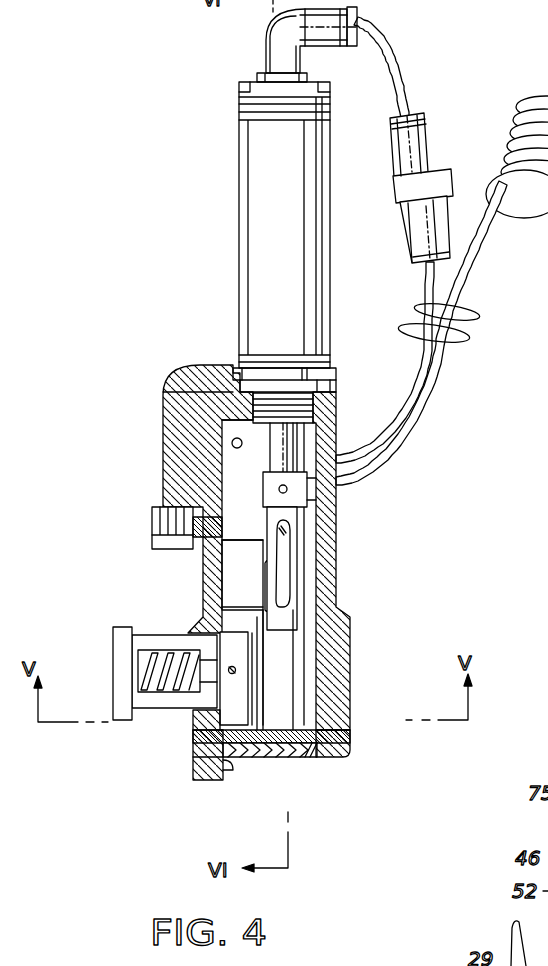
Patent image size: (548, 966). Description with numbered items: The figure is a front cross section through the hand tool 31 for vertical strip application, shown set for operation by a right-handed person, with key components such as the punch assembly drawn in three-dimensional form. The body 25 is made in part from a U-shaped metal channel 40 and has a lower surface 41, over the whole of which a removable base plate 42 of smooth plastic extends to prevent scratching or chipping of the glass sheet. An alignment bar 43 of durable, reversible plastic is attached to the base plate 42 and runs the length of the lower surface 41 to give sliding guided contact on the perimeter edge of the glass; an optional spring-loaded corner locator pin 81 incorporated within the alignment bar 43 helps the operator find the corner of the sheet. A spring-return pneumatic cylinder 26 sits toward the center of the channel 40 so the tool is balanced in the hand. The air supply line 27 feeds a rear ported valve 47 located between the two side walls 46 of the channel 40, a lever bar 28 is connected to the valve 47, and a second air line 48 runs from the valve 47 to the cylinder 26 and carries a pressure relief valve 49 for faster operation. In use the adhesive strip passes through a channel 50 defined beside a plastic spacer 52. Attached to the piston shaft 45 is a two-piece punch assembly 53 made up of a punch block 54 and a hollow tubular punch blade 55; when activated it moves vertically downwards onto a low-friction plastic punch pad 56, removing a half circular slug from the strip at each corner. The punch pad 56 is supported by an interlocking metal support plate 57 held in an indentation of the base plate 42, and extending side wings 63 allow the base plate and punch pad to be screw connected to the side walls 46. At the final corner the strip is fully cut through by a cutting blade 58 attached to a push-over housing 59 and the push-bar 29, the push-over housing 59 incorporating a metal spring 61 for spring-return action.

The body 25 is at (253, 457).
The pneumatic cylinder 26 is at (258, 196).
The air supply line 27 is at (478, 242).
The lever bar 28 is at (152, 527).
The push-bar 29 is at (118, 645).
The hand tool 31 is at (247, 420).
The U-shaped metal channel 40 is at (250, 410).
The lower surface 41 is at (350, 723).
The removable base plate 42 is at (350, 755).
The alignment bar 43 is at (200, 765).
The piston shaft 45 is at (278, 430).
The side walls 46 is at (205, 448).
The rear ported valve 47 is at (230, 467).
The second air line 48 is at (393, 53).
The pressure relief valve 49 is at (417, 145).
The channel 50 is at (285, 668).
The plastic spacer 52 is at (237, 560).
The punch assembly 53 is at (297, 516).
The punch block 54 is at (308, 492).
The punch blade 55 is at (300, 608).
The plastic punch pad 56 is at (305, 757).
The interlocking metal support plate 57 is at (283, 757).
The cutting blade 58 is at (222, 620).
The push-over housing 59 is at (158, 637).
The metal spring 61 is at (140, 679).
The side wings 63 is at (197, 733).
The corner locator pin 81 is at (231, 772).